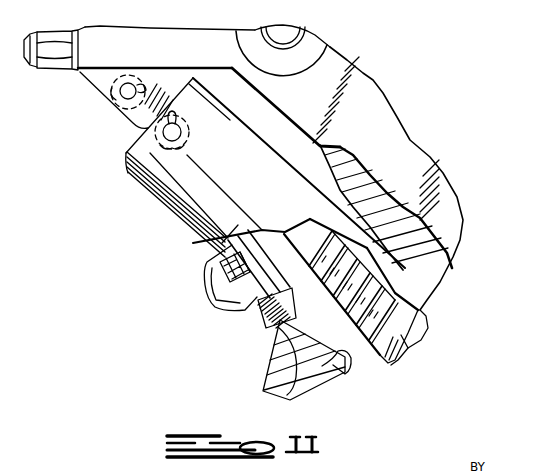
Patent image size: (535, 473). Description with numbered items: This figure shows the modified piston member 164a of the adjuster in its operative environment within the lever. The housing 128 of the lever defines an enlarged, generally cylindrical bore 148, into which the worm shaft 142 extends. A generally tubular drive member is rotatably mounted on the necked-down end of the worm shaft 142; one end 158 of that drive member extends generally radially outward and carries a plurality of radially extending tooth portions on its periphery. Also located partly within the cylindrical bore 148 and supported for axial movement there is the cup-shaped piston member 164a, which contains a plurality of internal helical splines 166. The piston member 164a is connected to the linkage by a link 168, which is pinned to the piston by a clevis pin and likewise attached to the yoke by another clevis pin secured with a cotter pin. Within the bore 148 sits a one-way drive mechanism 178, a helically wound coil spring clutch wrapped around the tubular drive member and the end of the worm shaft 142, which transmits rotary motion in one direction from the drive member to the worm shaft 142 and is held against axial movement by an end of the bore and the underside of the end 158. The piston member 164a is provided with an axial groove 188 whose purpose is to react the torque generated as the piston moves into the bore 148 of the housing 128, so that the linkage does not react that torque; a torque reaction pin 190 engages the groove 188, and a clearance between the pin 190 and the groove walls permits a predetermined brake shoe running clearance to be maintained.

The housing 128 is at (280, 325).
The worm shaft 142 is at (415, 324).
The cylindrical bore 148 is at (350, 373).
The end of tubular drive member 158 is at (287, 236).
The modified piston member 164a is at (160, 192).
The internal helical splines 166 is at (212, 238).
The link 168 is at (134, 124).
The one-way drive mechanism 178 is at (364, 367).
The axial groove 188 is at (214, 256).
The torque reaction pin 190 is at (250, 313).